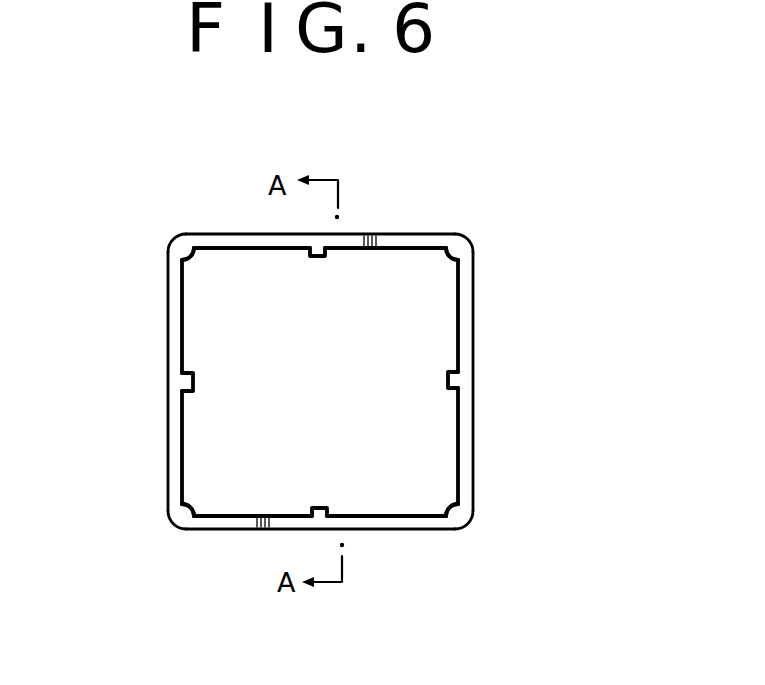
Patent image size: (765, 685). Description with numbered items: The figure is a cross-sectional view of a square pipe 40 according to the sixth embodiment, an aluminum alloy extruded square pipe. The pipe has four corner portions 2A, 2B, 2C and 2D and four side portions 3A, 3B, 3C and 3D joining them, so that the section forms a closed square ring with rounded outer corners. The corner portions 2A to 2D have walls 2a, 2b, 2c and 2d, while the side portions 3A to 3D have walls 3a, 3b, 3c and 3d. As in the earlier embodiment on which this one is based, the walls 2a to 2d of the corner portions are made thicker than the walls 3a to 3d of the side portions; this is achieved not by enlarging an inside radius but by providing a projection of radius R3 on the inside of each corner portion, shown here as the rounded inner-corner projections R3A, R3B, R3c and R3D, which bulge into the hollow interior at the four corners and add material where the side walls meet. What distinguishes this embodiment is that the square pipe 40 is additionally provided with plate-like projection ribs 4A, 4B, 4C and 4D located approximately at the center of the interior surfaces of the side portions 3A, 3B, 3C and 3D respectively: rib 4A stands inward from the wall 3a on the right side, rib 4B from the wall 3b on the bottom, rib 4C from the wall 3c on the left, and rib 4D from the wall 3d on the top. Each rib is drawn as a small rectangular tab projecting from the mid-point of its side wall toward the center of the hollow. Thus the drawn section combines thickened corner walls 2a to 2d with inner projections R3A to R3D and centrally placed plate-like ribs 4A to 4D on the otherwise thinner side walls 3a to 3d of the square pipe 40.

The square pipe 40 is at (355, 158).
The corner portion 2A is at (477, 231).
The corner portion 2B is at (485, 530).
The corner portion 2C is at (171, 540).
The corner portion 2D is at (146, 235).
The wall of corner portion 2a is at (452, 257).
The wall of corner portion 2b is at (456, 516).
The wall of corner portion 2c is at (186, 511).
The wall of corner portion 2d is at (185, 247).
The side portion 3A is at (473, 330).
The side portion 3B is at (385, 529).
The side portion 3C is at (168, 424).
The side portion 3D is at (231, 234).
The wall of side portion 3a is at (460, 418).
The wall of side portion 3b is at (233, 529).
The wall of side portion 3c is at (180, 343).
The wall of side portion 3d is at (392, 236).
The plate-like projection rib 4A is at (446, 380).
The plate-like projection rib 4B is at (321, 508).
The plate-like projection rib 4C is at (195, 381).
The plate-like projection rib 4D is at (320, 258).
The projection of radius R3 R3A is at (447, 257).
The projection of radius R3 R3B is at (448, 508).
The projection of radius R3 R3c is at (198, 508).
The projection of radius R3 R3D is at (200, 262).